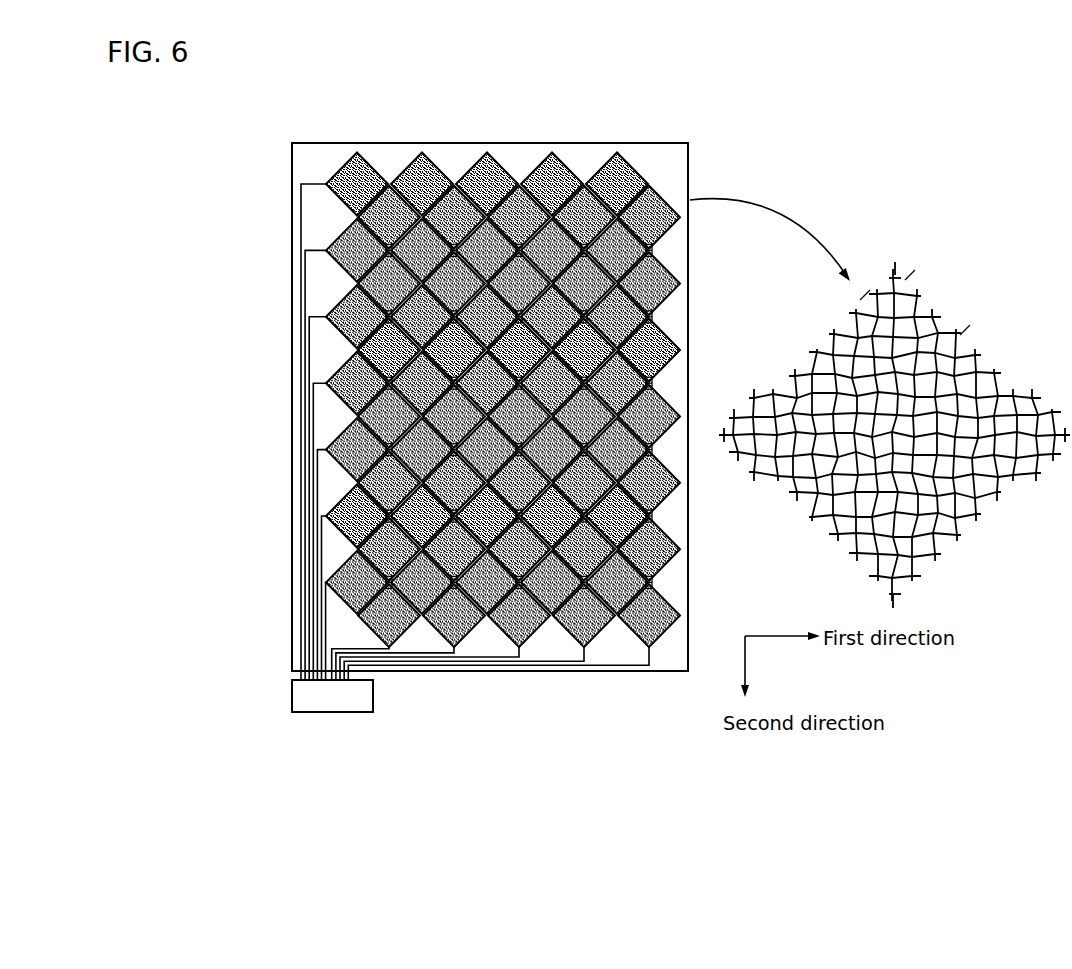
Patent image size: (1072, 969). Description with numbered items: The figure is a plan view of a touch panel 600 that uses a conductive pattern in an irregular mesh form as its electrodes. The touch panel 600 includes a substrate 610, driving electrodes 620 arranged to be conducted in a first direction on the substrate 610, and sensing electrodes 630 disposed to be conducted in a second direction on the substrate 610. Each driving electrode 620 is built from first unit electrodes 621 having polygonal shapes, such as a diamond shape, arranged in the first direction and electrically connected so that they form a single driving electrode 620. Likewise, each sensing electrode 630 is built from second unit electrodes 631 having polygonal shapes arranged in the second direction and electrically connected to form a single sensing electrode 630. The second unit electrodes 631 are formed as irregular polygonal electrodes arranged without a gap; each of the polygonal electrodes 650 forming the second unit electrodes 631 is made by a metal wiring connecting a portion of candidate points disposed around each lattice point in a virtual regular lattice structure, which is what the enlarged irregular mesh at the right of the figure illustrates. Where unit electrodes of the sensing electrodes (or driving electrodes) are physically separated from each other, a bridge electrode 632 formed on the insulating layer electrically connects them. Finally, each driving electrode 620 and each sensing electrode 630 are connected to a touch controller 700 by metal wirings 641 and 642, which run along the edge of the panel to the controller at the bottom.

The touch panel 600 is at (462, 143).
The substrate 610 is at (520, 152).
The driving electrode 620 is at (637, 163).
The first unit electrode 621 is at (601, 160).
The sensing electrode 630 is at (676, 238).
The second unit electrode 631 is at (652, 250).
The bridge electrode 632 is at (658, 265).
The metal wiring 641 is at (311, 182).
The metal wiring 642 is at (627, 668).
The polygonal electrode 650 is at (948, 332).
The touch controller 700 is at (341, 713).